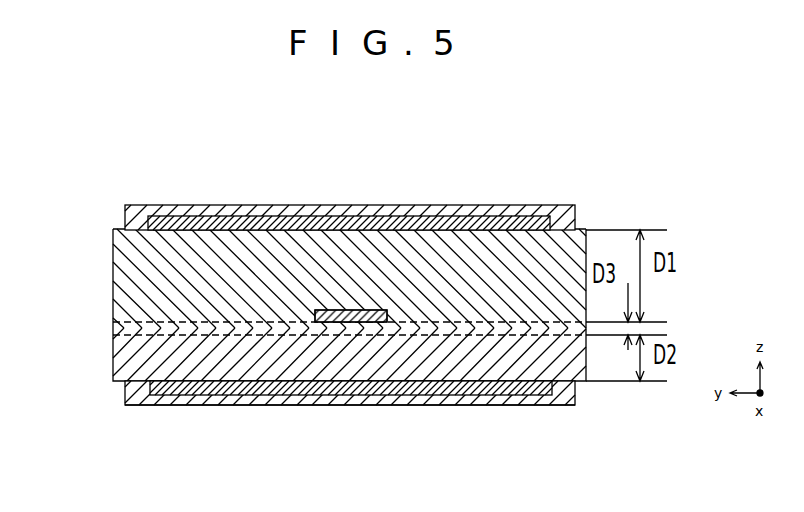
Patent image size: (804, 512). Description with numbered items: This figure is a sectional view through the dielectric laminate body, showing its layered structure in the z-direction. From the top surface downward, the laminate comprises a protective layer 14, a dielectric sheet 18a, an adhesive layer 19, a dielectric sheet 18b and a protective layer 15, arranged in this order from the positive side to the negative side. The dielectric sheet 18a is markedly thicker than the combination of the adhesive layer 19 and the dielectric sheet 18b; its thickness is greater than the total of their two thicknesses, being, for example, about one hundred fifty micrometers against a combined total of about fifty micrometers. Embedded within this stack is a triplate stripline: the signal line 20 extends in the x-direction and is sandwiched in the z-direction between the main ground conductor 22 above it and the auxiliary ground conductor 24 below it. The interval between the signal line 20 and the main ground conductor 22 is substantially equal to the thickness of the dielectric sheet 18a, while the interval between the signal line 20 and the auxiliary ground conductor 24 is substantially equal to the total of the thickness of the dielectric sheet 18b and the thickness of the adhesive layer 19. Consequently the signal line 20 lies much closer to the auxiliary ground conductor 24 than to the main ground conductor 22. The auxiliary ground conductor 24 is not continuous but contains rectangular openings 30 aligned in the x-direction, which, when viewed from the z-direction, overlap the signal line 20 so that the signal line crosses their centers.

The protective layer 14 is at (245, 212).
The protective layer 15 is at (258, 405).
The dielectric sheet 18a is at (120, 274).
The dielectric sheet 18b is at (118, 370).
The adhesive layer 19 is at (113, 328).
The signal line 20 is at (320, 310).
The main ground conductor 22 is at (351, 218).
The auxiliary ground conductor 24 is at (512, 405).
The opening 30 is at (360, 394).